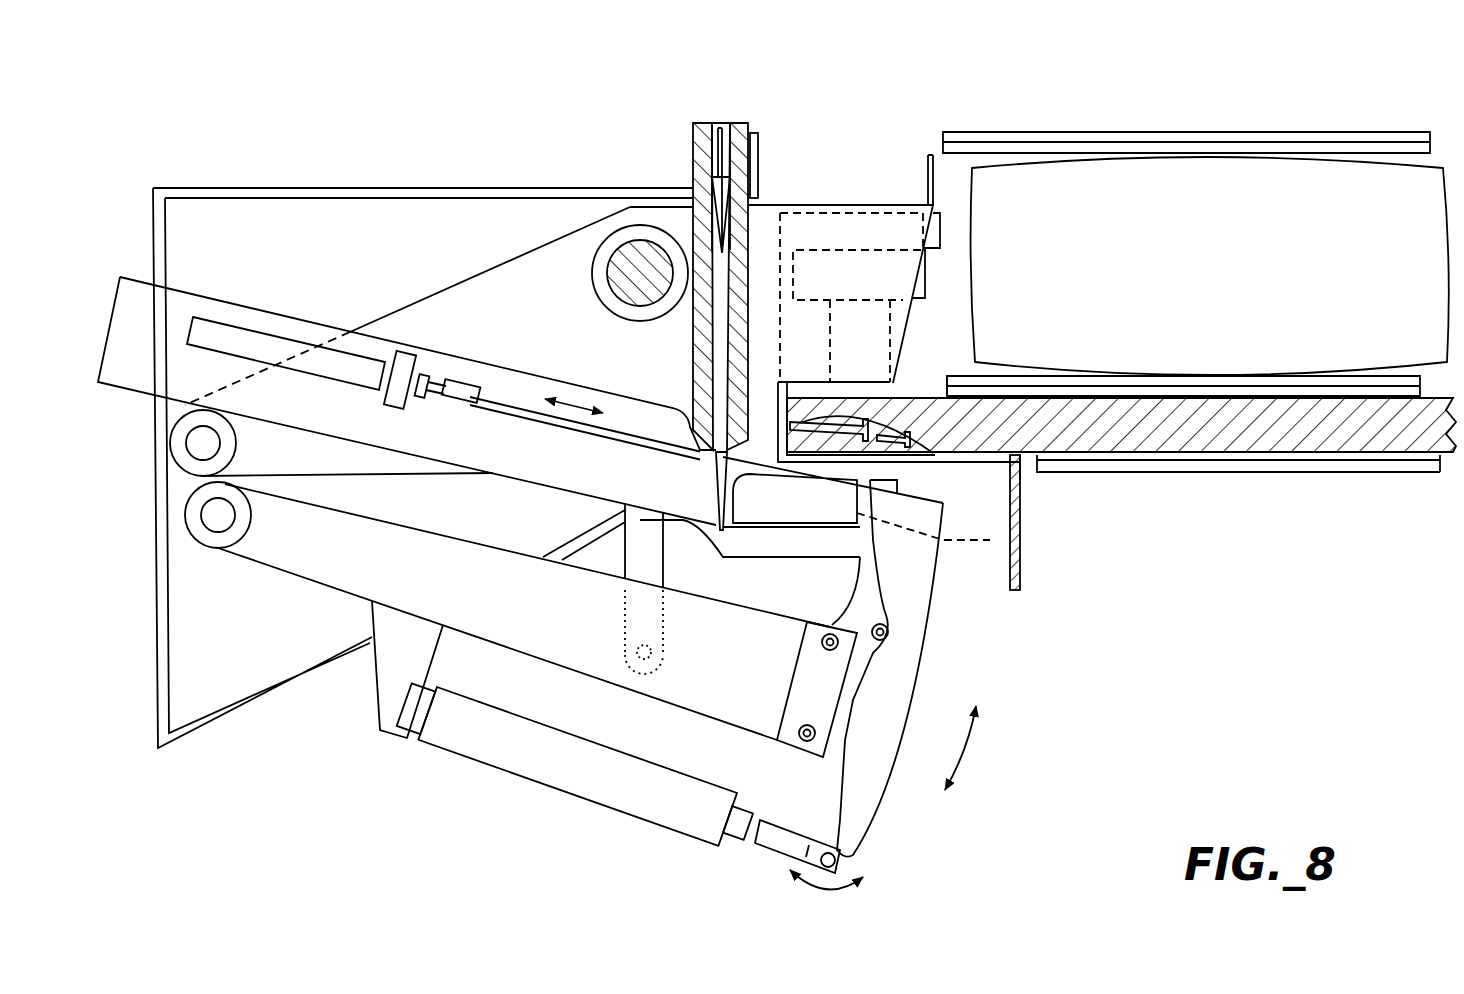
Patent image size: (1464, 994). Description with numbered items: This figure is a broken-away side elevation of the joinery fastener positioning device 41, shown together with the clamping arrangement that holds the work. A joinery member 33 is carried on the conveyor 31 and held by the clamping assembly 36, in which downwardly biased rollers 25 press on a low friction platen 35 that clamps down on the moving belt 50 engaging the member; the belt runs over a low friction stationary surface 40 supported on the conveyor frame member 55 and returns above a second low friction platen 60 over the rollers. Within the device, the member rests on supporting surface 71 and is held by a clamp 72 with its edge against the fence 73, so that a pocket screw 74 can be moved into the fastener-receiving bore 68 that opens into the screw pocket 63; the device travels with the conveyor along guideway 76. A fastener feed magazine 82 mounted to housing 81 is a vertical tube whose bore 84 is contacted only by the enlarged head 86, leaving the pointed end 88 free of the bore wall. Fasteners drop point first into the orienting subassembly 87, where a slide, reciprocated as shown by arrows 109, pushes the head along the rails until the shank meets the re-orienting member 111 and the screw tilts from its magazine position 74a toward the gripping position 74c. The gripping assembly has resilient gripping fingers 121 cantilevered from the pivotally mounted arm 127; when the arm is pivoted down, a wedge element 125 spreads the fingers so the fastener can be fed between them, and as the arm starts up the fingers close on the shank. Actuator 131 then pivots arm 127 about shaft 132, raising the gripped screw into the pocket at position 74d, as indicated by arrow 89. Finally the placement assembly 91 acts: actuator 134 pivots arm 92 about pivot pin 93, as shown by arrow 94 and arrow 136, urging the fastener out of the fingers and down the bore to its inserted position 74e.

The downwardly biased rollers 25 is at (1240, 175).
The conveyor 31 is at (1265, 492).
The joinery member 33 is at (1127, 460).
The low friction platen 35 is at (1190, 375).
The clamping assembly 36 is at (1137, 128).
The low friction stationary surface 40 is at (1300, 458).
The fastener positioning device 41 is at (975, 798).
The moving belt 50 is at (990, 132).
The conveyor frame member 55 is at (1192, 470).
The second low friction platen 60 is at (1320, 145).
The pocket 63 is at (899, 407).
The fastener-receiving bore 68 is at (820, 412).
The supporting surface 71 is at (1028, 456).
The clamp 72 is at (910, 383).
The fence 73 is at (795, 400).
The pocket screw 74 is at (706, 268).
The magazine position 74a is at (717, 470).
The gripping position 74c is at (920, 486).
The pocket position 74d is at (915, 394).
The inserted position 74e is at (830, 410).
The guideway 76 is at (617, 242).
The housing 81 is at (255, 188).
The fastener feed magazine 82 is at (692, 152).
The bore 84 is at (716, 130).
The enlarged head 86 is at (721, 175).
The orienting subassembly 87 is at (412, 403).
The pointed end 88 is at (722, 237).
The arrow 89 is at (972, 758).
The placement assembly 91 is at (943, 588).
The arm 92 is at (873, 800).
The pivot pin 93 is at (882, 642).
The arrow 94 is at (827, 903).
The arrows 109 is at (572, 397).
The re-orienting member 111 is at (749, 526).
The gripping fingers 121 is at (928, 540).
The wedge element 125 is at (836, 592).
The arm 127 is at (722, 690).
The actuator 131 is at (663, 540).
The shaft 132 is at (218, 517).
The actuator 134 is at (587, 793).
The arrow 136 is at (905, 640).